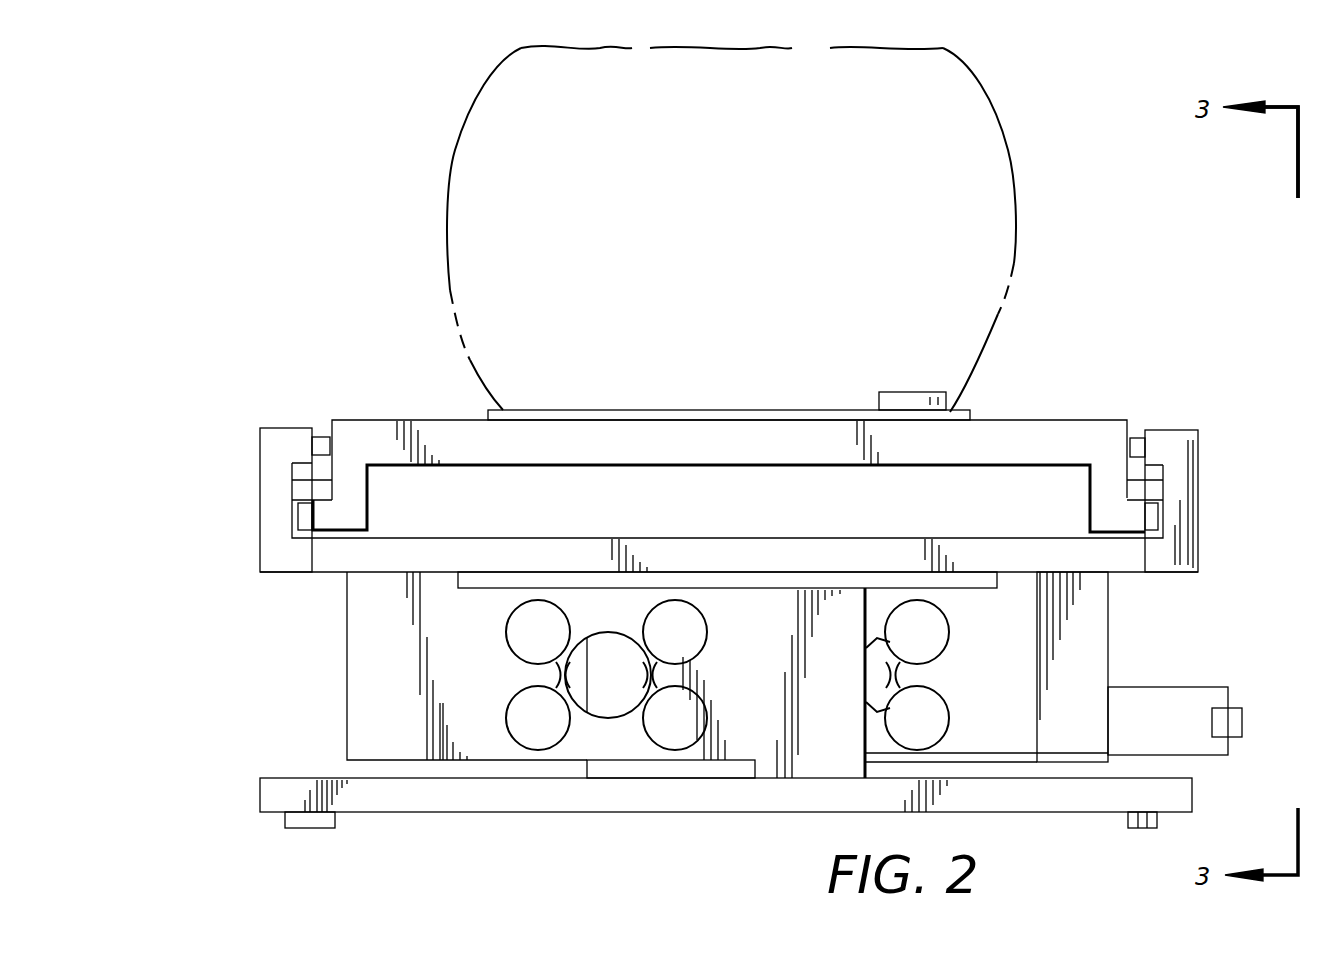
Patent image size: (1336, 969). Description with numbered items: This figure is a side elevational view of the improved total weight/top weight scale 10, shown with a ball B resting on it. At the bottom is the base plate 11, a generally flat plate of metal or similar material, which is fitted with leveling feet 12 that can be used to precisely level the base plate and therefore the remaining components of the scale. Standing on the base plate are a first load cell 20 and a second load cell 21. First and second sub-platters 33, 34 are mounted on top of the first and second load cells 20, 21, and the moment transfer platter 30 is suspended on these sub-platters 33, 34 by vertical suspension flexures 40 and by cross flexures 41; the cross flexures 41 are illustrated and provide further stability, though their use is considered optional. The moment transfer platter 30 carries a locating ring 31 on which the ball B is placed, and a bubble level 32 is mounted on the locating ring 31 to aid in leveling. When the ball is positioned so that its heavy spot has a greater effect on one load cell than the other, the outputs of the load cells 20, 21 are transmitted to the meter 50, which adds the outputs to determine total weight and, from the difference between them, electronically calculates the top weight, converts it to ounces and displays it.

The bottle B is at (474, 115).
The total weight/top weight scale 10 is at (1222, 406).
The base plate 11 is at (270, 786).
The leveling feet 12 is at (312, 820).
The first load cell 20 is at (360, 624).
The second load cell 21 is at (1098, 636).
The moment transfer platter 30 is at (1090, 420).
The locating ring 31 is at (955, 412).
The bubble level 32 is at (910, 392).
The first sub-platter 33 is at (258, 495).
The second sub-platter 34 is at (1203, 495).
The vertical suspension flexures 40 is at (305, 477).
The cross flexures 41 is at (300, 492).
The meter 50 is at (1242, 722).